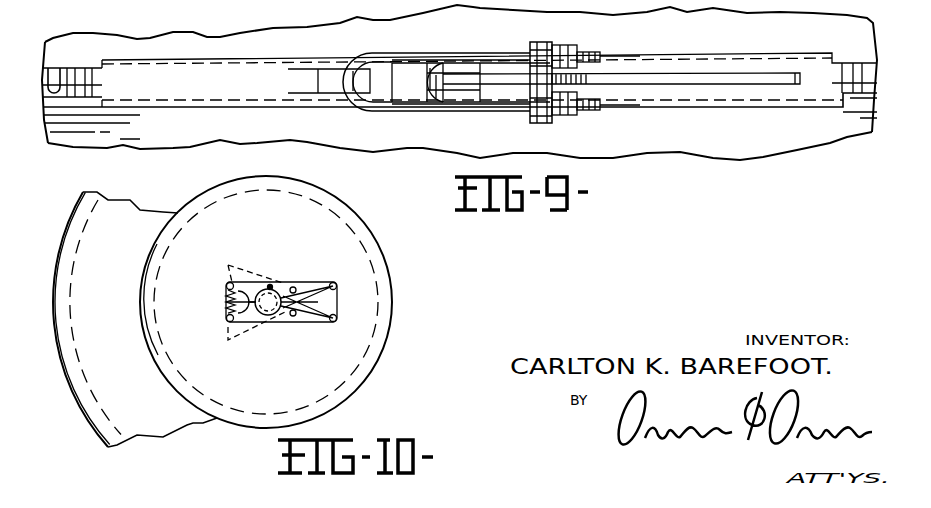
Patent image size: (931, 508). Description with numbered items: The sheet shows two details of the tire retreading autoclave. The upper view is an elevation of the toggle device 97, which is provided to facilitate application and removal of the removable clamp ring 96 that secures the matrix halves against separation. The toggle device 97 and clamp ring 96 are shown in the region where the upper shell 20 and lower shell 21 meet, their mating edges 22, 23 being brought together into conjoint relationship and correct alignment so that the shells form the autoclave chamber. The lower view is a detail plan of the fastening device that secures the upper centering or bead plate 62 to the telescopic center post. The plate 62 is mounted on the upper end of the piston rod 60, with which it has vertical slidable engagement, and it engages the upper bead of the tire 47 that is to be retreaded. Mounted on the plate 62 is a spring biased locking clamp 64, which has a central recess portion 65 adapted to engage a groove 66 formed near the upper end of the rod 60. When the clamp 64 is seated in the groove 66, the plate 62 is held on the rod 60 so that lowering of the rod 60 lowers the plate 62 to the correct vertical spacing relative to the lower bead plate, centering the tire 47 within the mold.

In FIG. 9, the upper shell 20 is at (281, 35).
In FIG. 9, the lower shell 21 is at (373, 149).
In FIG. 9, the mating edge 22 is at (50, 72).
In FIG. 9, the mating edge 23 is at (103, 82).
In FIG. 9, the removable clamp ring 96 is at (715, 56).
In FIG. 9, the toggle device 97 is at (495, 53).
In FIG. 10, the upper centering or bead plate 62 is at (392, 300).
In FIG. 10, the tire 47 is at (82, 408).
In FIG. 10, the piston rod 60 is at (266, 315).
In FIG. 10, the spring biased locking clamp 64 is at (225, 307).
In FIG. 10, the central recess portion 65 is at (270, 284).
In FIG. 10, the groove 66 is at (257, 327).